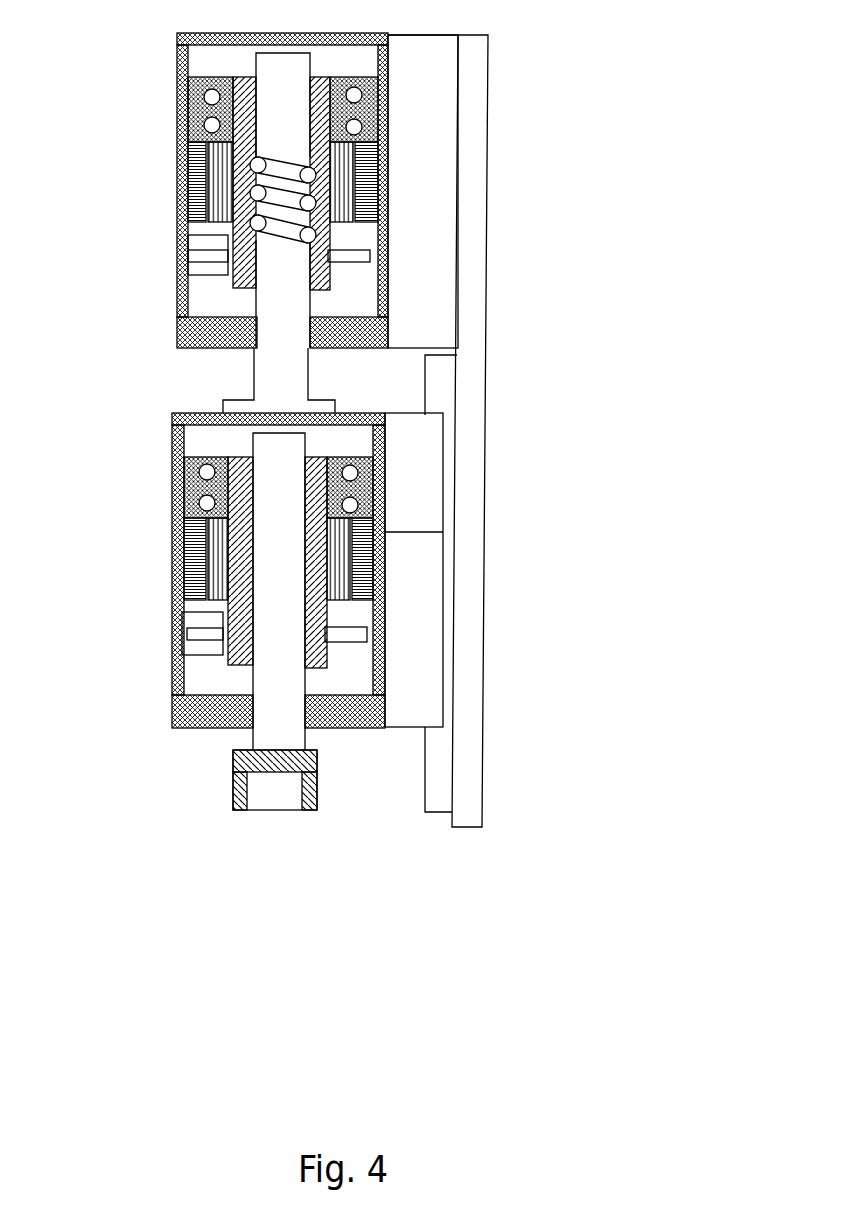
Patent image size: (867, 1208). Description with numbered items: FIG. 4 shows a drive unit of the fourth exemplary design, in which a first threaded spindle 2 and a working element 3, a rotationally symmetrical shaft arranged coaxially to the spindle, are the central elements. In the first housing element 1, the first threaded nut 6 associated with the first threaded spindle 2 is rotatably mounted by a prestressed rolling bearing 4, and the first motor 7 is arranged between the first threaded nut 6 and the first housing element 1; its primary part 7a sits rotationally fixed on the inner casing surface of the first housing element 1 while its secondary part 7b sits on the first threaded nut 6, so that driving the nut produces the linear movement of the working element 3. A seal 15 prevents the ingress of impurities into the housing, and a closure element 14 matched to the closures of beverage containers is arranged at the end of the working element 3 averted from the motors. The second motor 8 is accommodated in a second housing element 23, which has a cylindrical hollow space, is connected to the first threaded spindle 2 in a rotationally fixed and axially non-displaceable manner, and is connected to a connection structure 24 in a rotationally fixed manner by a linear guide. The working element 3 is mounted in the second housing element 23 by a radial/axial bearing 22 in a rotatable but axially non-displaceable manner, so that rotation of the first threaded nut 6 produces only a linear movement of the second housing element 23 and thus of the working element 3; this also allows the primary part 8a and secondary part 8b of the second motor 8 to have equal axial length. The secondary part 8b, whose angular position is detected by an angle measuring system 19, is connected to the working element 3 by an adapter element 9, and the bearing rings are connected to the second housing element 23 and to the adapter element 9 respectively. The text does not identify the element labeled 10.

The first housing element 1 is at (182, 50).
The first threaded spindle 2 is at (278, 297).
The working element 3 is at (273, 685).
The rolling bearing 4 is at (205, 97).
The first threaded nut 6 is at (247, 135).
The first motor 7 is at (202, 168).
The primary part 7a is at (195, 205).
The secondary part 7b is at (220, 163).
The second motor 8 is at (198, 546).
The primary part 8a is at (192, 583).
The secondary part 8b is at (217, 543).
The adapter element 9 is at (242, 513).
The sensor 10 is at (205, 257).
The closure element 14 is at (270, 792).
The seal 15 is at (253, 332).
The angle measuring system 19 is at (202, 635).
The radial/axial bearing 22 is at (202, 478).
The second housing element 23 is at (178, 427).
The connection structure 24 is at (470, 493).